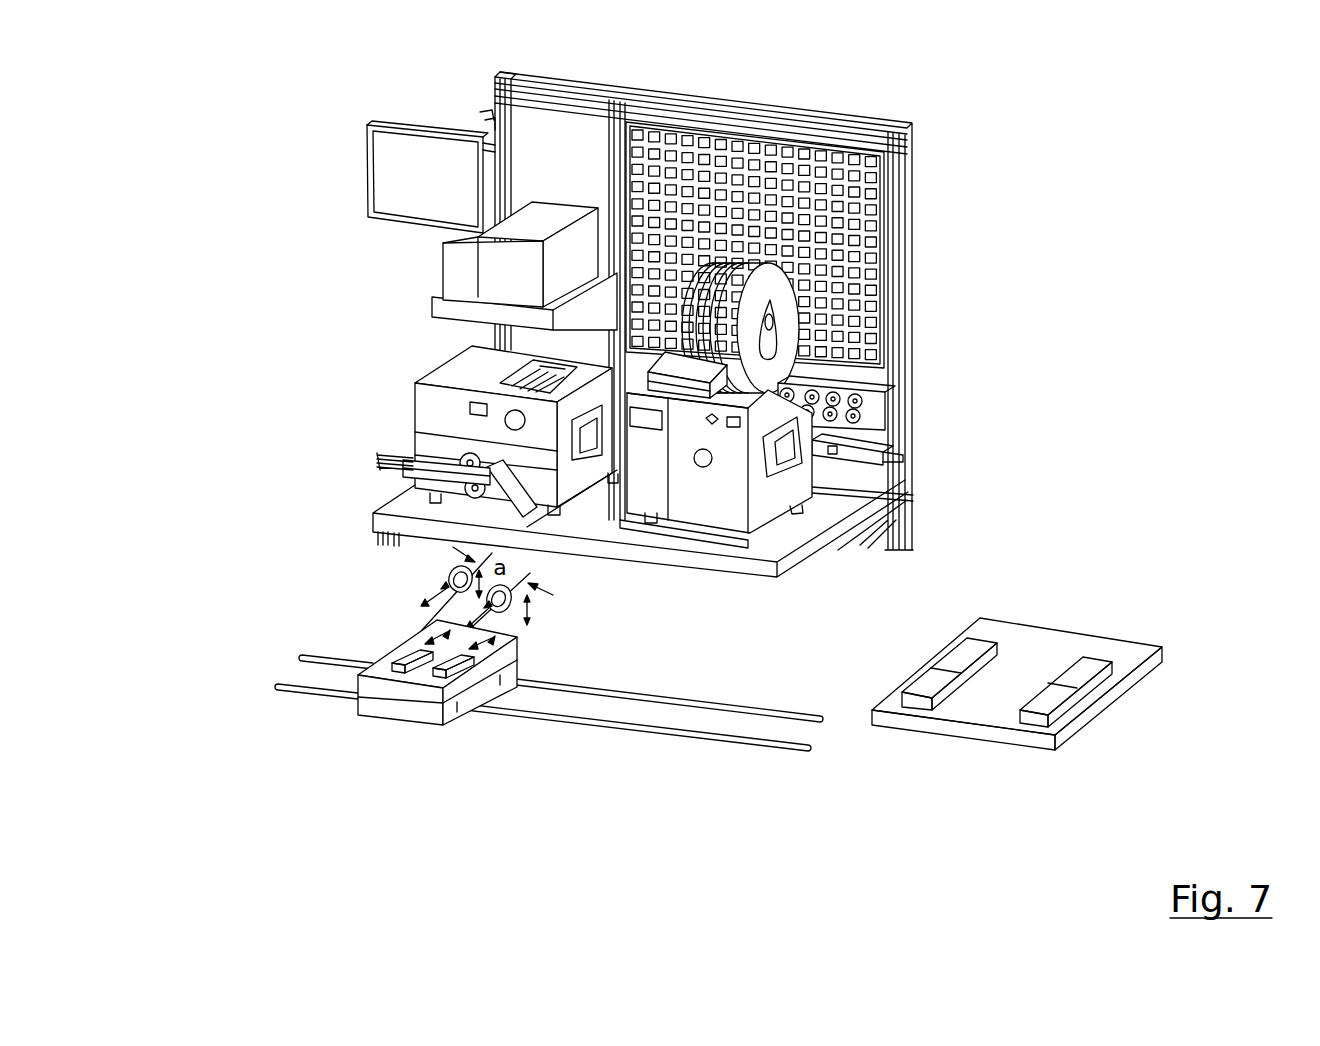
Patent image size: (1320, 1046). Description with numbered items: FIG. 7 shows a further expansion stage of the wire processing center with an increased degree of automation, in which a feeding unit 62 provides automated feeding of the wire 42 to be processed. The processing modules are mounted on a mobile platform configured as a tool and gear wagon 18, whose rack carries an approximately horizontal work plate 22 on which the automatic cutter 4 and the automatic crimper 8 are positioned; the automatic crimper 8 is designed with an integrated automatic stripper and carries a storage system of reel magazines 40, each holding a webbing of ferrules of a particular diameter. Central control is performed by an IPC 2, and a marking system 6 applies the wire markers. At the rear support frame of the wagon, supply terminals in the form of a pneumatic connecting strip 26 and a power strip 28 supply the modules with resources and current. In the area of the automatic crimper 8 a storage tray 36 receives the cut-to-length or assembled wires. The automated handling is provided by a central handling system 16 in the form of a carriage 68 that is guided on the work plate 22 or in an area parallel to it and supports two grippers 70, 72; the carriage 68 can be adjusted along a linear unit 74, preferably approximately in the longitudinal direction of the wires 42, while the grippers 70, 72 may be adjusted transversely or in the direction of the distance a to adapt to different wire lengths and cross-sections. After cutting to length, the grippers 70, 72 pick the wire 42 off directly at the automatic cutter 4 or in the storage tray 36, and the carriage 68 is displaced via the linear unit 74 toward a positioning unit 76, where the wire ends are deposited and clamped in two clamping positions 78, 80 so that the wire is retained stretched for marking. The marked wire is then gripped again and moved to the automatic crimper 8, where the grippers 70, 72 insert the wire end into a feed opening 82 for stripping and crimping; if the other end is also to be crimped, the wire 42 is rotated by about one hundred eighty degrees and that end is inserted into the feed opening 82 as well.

The IPC 2 is at (408, 147).
The automatic cutter 4 is at (440, 407).
The marking system 6 is at (492, 257).
The automatic crimper 8 is at (726, 468).
The central handling system 16 is at (603, 742).
The tool and gear wagon 18 is at (925, 195).
The work plate 22 is at (397, 508).
The pneumatic connecting strip 26 is at (875, 375).
The power strip 28 is at (852, 447).
The storage tray 36 is at (706, 550).
The reel magazine 40 is at (770, 290).
The wire 42 is at (396, 460).
The feeding unit 62 is at (418, 463).
The carriage 68 is at (398, 713).
The gripper 70 is at (447, 578).
The gripper 72 is at (487, 600).
The linear unit 74 is at (802, 751).
The positioning unit 76 is at (1090, 716).
The clamping position 78 is at (968, 650).
The clamping position 80 is at (1090, 666).
The feed opening 82 is at (708, 468).